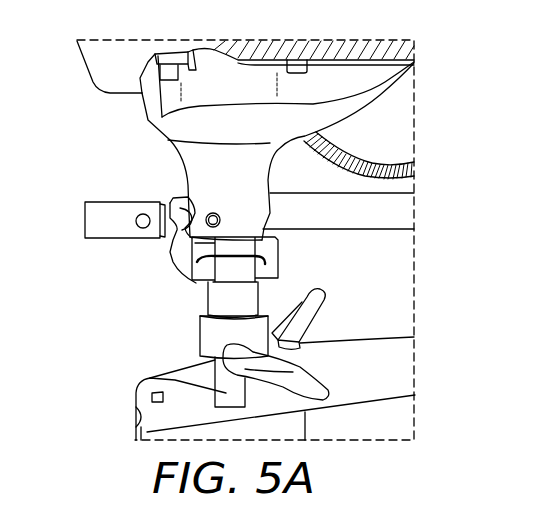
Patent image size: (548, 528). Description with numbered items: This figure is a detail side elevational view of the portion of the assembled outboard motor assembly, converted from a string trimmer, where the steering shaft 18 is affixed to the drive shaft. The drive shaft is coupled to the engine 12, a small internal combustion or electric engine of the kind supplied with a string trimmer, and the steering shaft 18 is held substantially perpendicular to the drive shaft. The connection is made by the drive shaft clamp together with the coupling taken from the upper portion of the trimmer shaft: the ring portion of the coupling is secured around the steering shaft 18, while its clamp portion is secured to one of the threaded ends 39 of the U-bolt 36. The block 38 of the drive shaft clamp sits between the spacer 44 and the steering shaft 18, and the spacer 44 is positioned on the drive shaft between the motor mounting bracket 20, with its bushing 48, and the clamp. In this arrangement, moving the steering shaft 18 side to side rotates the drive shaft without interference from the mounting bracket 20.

The engine 12 is at (378, 81).
The steering shaft 18 is at (383, 229).
The motor mounting bracket 20 is at (383, 375).
The U-bolt 36 is at (217, 283).
The block 38 is at (195, 238).
The threaded end 39 is at (223, 263).
The spacer 44 is at (250, 302).
The bushing 48 is at (150, 378).